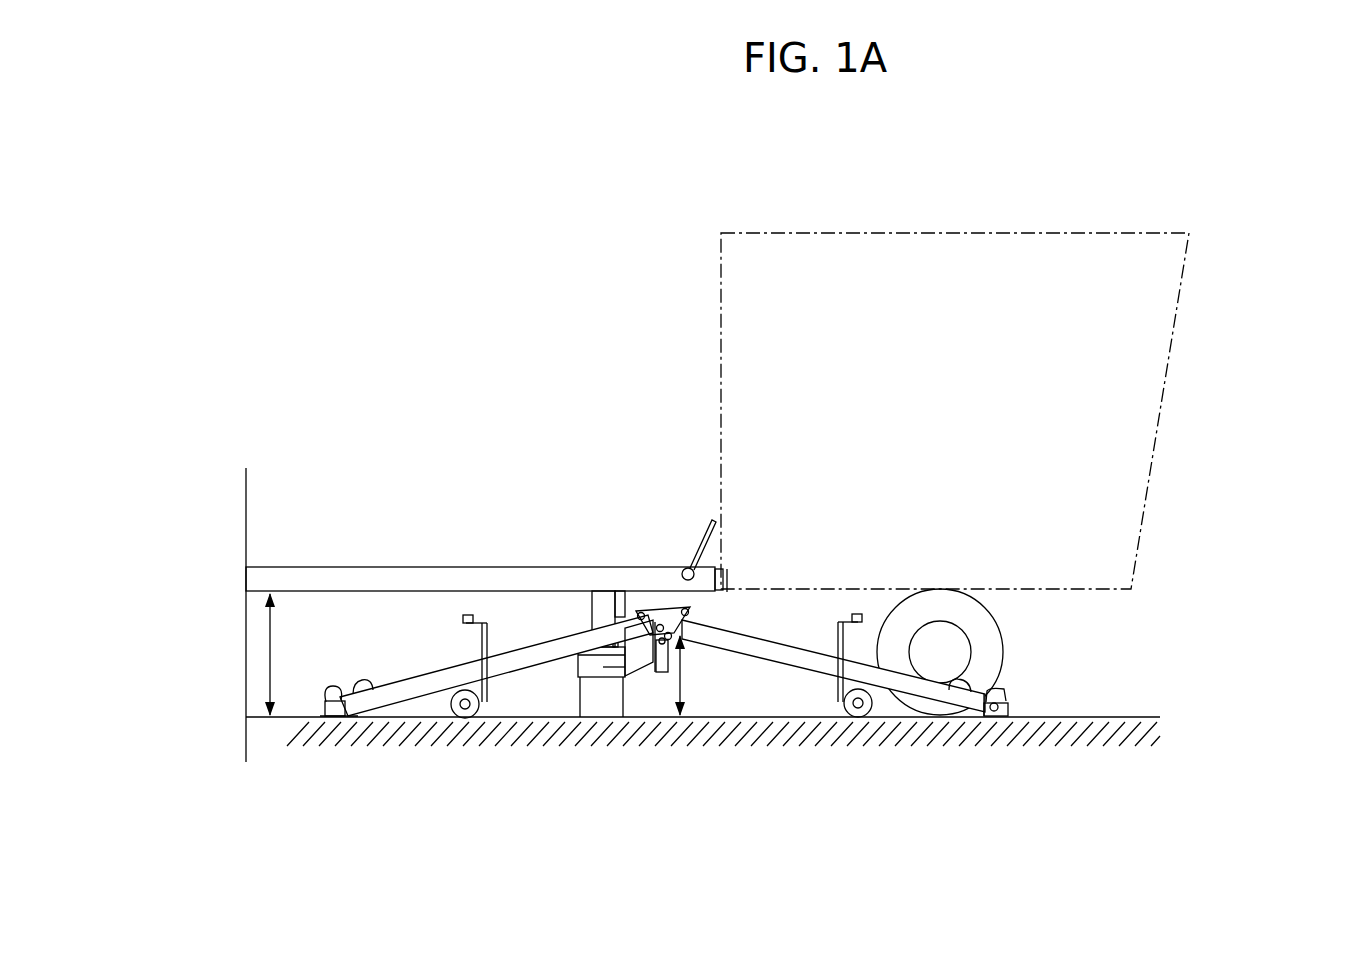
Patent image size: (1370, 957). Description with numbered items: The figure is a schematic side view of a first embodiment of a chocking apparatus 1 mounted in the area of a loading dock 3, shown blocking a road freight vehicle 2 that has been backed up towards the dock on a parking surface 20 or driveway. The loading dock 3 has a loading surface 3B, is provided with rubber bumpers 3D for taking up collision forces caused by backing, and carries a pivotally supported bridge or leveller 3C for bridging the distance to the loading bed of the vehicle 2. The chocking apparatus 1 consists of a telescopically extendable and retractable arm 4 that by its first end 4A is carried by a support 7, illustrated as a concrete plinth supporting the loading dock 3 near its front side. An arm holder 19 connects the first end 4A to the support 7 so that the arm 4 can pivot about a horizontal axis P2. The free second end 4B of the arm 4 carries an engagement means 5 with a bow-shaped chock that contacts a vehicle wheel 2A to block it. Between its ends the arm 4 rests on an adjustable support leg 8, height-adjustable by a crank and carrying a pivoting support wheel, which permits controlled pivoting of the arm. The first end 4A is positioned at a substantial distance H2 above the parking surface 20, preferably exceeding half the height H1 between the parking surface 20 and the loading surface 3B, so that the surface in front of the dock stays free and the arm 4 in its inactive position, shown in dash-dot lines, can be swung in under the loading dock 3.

The chocking apparatus 1 is at (783, 674).
The road freight vehicle 2 is at (1165, 218).
The vehicle wheel 2A is at (905, 702).
The loading dock 3 is at (548, 550).
The loading surface 3B is at (393, 568).
The bridge or leveller 3C is at (700, 546).
The rubber bumpers 3D is at (726, 594).
The telescopically extendable and retractable arm 4 is at (749, 658).
The first end of the arm 4A is at (672, 614).
The second end of the arm 4B is at (978, 710).
The engagement means 5 is at (1012, 718).
The support 7 is at (598, 690).
The support leg 8 is at (841, 714).
The arm holder 19 is at (646, 609).
The parking surface 20 is at (1128, 717).
The second horizontal axis P2 is at (660, 645).
The height between parking surface and loading plane H1 is at (294, 654).
The distance of arm first end above parking surface H2 is at (702, 675).